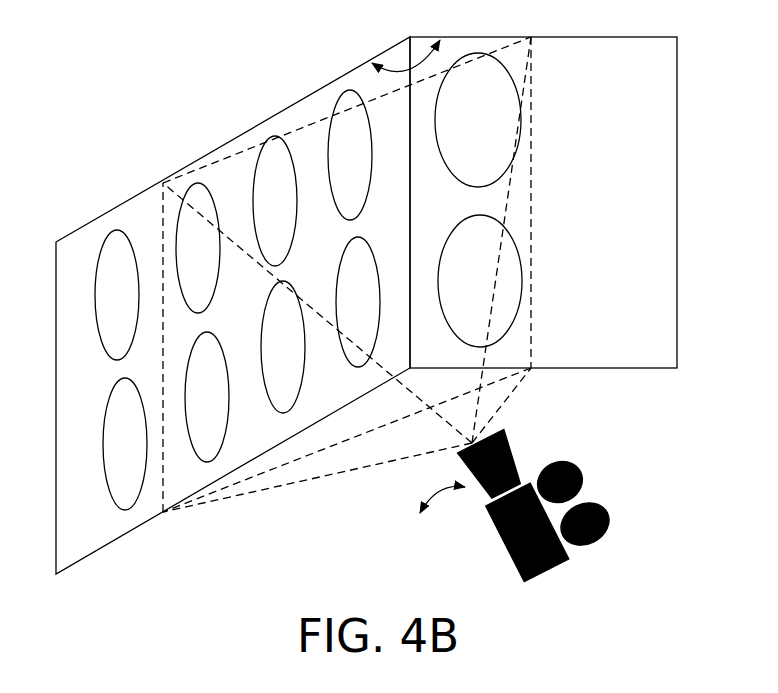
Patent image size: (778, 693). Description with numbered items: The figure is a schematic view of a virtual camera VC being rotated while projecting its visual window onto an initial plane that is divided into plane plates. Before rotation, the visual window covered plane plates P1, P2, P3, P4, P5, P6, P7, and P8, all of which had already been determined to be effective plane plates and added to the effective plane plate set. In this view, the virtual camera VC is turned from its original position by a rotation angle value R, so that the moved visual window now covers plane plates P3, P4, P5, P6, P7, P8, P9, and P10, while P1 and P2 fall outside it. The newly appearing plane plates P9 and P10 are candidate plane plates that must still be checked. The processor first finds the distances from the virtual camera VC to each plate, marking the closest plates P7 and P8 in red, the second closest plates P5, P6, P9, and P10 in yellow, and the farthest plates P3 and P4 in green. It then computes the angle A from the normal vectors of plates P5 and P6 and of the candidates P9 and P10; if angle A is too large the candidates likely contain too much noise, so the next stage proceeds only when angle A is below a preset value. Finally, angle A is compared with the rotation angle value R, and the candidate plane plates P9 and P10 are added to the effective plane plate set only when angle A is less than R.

The plane plate P1 is at (117, 295).
The plane plate P2 is at (125, 444).
The plane plate P3 is at (198, 248).
The plane plate P4 is at (207, 397).
The plane plate P5 is at (275, 201).
The plane plate P6 is at (283, 347).
The plane plate P7 is at (350, 155).
The plane plate P8 is at (358, 302).
The candidate plane plate P9 is at (478, 120).
The candidate plane plate P10 is at (480, 281).
The angle A is at (400, 56).
The rotation angle value R is at (453, 514).
The virtual camera VC is at (598, 484).